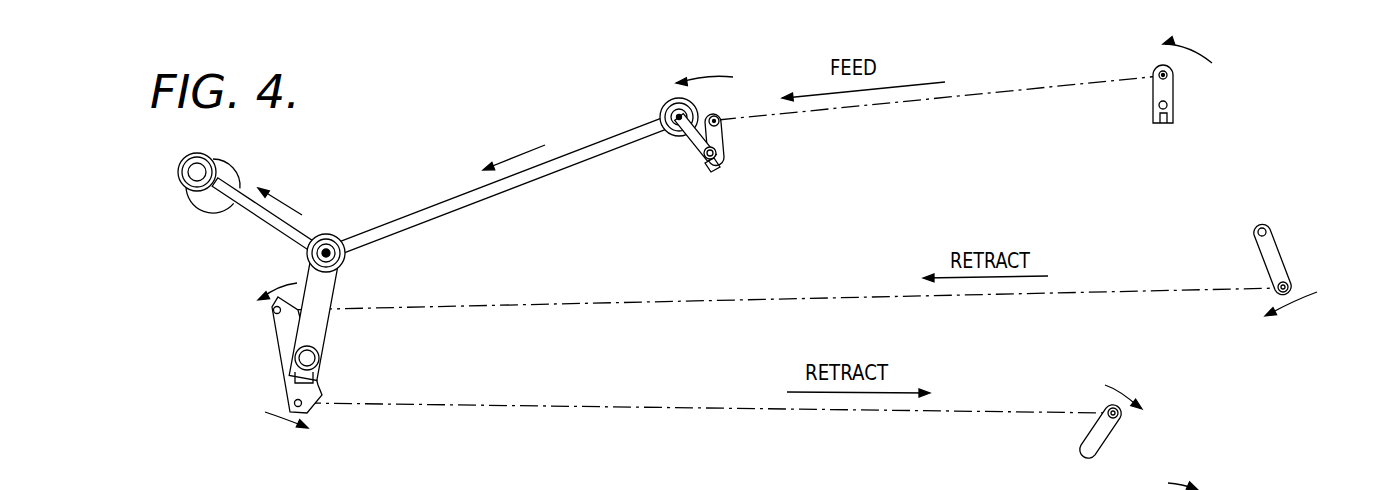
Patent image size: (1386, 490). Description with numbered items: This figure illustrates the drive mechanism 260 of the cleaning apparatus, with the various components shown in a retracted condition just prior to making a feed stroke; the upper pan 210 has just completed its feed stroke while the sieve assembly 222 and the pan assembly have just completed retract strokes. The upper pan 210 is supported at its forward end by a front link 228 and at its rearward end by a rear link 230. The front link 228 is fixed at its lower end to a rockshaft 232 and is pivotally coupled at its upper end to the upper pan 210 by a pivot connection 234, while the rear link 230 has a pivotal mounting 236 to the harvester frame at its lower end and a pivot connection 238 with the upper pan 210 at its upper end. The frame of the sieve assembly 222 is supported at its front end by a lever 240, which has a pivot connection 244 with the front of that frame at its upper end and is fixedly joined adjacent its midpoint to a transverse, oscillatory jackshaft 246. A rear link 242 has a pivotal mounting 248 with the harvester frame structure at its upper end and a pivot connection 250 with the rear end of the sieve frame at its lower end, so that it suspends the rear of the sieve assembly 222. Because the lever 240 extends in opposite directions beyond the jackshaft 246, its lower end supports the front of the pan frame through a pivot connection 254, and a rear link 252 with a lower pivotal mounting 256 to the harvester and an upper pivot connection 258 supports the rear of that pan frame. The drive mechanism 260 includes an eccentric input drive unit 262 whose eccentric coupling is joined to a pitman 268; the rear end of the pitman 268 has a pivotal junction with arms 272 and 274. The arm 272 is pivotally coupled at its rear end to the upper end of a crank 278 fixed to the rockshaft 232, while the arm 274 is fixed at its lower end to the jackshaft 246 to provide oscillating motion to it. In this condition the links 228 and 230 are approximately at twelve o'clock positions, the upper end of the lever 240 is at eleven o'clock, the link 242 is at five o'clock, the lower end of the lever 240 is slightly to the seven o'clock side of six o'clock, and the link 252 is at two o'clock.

The upper pan 210 is at (982, 93).
The sieve assembly 222 is at (679, 302).
The front link 228 is at (720, 133).
The rear link 230 is at (1170, 93).
The rockshaft 232 is at (707, 162).
The pivot connection 234 is at (718, 117).
The pivotal mounting 236 is at (1160, 108).
The pivot connection 238 is at (1177, 77).
The lever 240 is at (275, 352).
The rear link 242 is at (1273, 248).
The pivot connection 244 is at (271, 312).
The jackshaft 246 is at (319, 358).
The pivotal mounting 248 is at (1257, 232).
The pivot connection 250 is at (1289, 285).
The rear link 252 is at (1100, 428).
The pivot connection 254 is at (308, 408).
The pivotal mounting 256 is at (562, 407).
The pivot connection 258 is at (1120, 417).
The drive mechanism 260 is at (426, 183).
The eccentric input drive unit 262 is at (176, 157).
The pitman 268 is at (265, 219).
The arm 272 is at (517, 182).
The arm 274 is at (328, 283).
The crank 278 is at (693, 140).